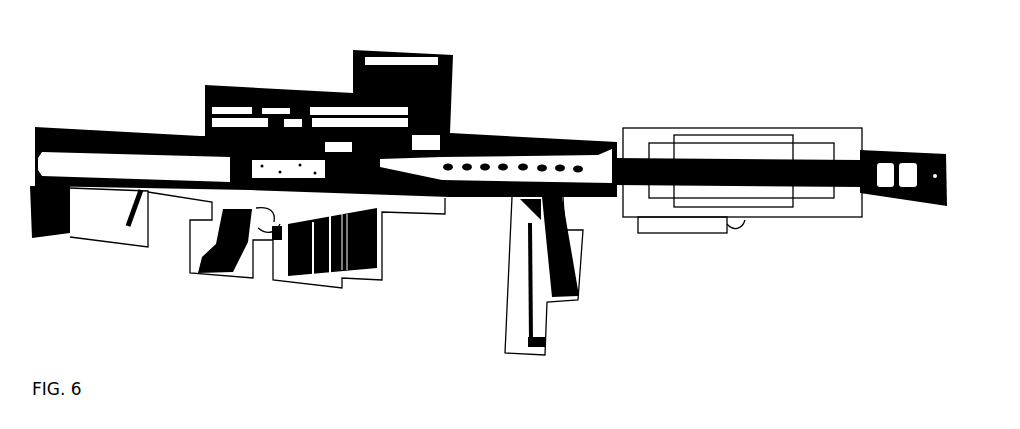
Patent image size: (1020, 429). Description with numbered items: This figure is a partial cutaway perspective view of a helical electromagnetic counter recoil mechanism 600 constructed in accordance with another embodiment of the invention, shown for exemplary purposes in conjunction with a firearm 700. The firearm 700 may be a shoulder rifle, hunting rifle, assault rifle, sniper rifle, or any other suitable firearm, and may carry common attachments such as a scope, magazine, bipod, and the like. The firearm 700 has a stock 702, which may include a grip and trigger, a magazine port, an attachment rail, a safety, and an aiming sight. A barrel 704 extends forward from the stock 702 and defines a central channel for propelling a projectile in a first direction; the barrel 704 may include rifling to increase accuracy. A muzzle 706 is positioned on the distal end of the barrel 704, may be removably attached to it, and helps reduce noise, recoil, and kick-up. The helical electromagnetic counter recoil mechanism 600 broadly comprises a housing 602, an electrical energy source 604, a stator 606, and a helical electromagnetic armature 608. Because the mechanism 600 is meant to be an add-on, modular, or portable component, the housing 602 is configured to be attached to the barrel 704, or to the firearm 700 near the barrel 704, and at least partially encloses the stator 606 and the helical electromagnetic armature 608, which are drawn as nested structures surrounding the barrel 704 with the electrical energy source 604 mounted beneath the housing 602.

The firearm 700 is at (232, 30).
The stock 702 is at (150, 138).
The housing 602 is at (496, 140).
The barrel 704 is at (841, 170).
The muzzle 706 is at (883, 148).
The helical electromagnetic counter recoil mechanism 600 is at (765, 114).
The electrical energy source 604 is at (670, 233).
The stator 606 is at (818, 198).
The helical electromagnetic armature 608 is at (782, 207).